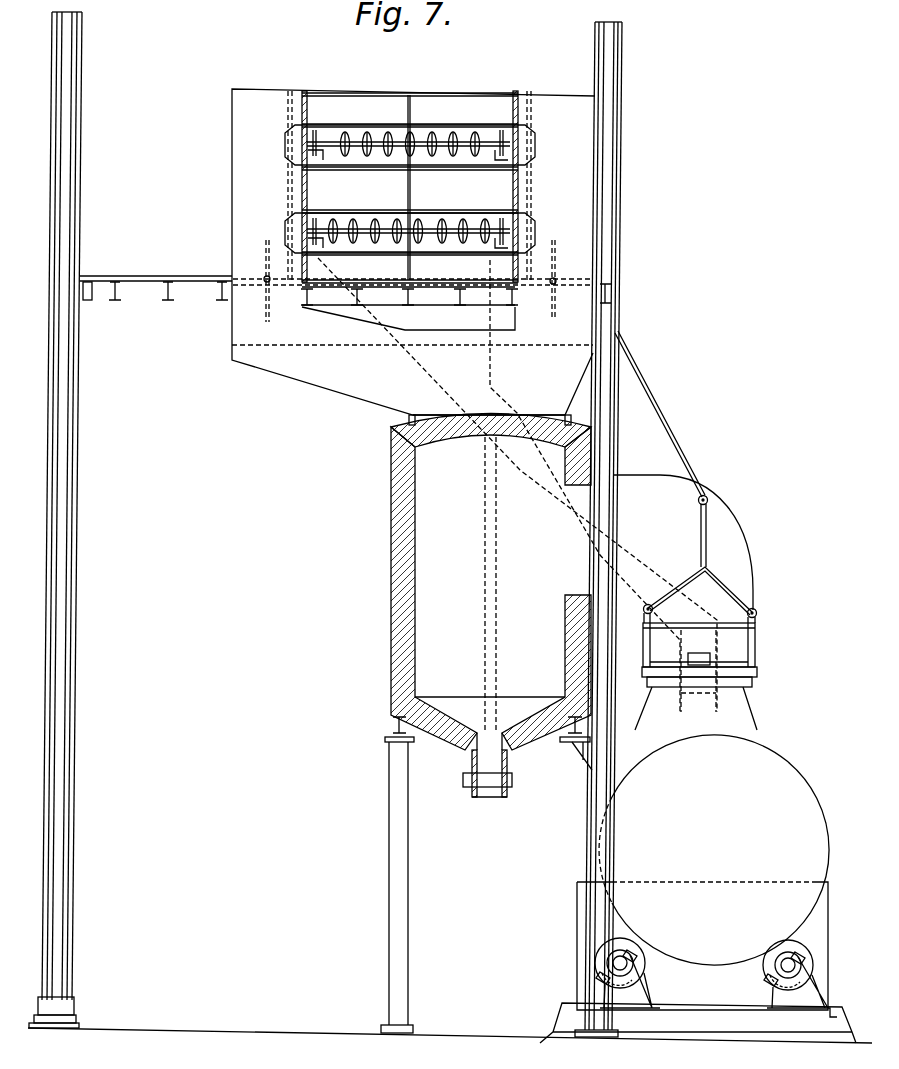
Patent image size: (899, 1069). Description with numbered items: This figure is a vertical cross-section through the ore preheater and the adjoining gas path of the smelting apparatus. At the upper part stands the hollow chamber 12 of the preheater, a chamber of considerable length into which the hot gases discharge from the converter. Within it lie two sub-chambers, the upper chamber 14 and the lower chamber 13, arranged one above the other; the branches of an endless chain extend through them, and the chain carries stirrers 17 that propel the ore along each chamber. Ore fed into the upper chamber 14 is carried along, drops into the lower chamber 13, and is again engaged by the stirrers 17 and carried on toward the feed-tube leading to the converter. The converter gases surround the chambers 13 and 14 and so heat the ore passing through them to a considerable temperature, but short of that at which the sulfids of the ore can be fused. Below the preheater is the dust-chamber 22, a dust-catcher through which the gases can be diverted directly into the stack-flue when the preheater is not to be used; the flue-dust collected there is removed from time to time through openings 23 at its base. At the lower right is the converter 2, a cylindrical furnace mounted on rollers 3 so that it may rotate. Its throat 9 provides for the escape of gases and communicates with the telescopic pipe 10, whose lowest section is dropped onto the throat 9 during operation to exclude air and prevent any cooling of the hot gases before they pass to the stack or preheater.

The converter 2 is at (714, 850).
The rollers 3 is at (762, 973).
The throat 9 is at (743, 702).
The telescopic pipe 10 is at (752, 649).
The hollow chamber 12 is at (232, 190).
The lower chamber 13 is at (467, 208).
The upper chamber 14 is at (466, 121).
The stirrers 17 is at (388, 153).
The dust-chamber 22 is at (486, 724).
The openings 23 is at (490, 788).